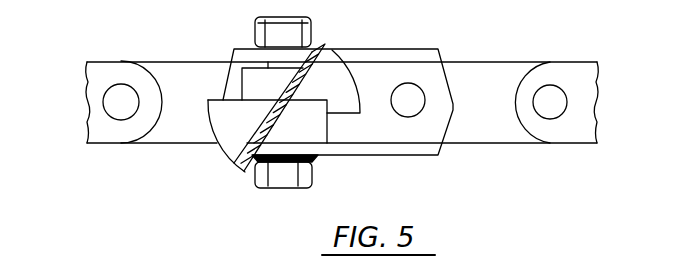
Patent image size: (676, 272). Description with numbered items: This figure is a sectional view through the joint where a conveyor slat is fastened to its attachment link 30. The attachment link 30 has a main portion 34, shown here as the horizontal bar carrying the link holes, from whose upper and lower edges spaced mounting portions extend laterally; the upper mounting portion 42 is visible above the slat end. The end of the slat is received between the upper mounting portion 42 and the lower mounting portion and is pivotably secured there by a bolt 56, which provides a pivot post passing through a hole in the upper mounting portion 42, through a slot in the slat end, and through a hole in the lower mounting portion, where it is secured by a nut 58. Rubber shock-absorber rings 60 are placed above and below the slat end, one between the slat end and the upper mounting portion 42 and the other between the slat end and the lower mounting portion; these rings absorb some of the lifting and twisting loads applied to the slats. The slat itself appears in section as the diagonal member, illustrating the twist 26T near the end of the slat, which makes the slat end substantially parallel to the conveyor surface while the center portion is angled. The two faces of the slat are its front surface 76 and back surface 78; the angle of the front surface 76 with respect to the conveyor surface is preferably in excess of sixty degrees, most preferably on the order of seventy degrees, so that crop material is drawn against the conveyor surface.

The attachment link 30 is at (432, 127).
The main portion 34 is at (415, 46).
The upper mounting portion 42 is at (344, 46).
The twist 26T is at (332, 83).
The bolt 56 is at (283, 177).
The nut 58 is at (262, 33).
The rubber shock-absorber rings 60 is at (253, 82).
The front surface 76 is at (333, 108).
The back surface 78 is at (225, 132).